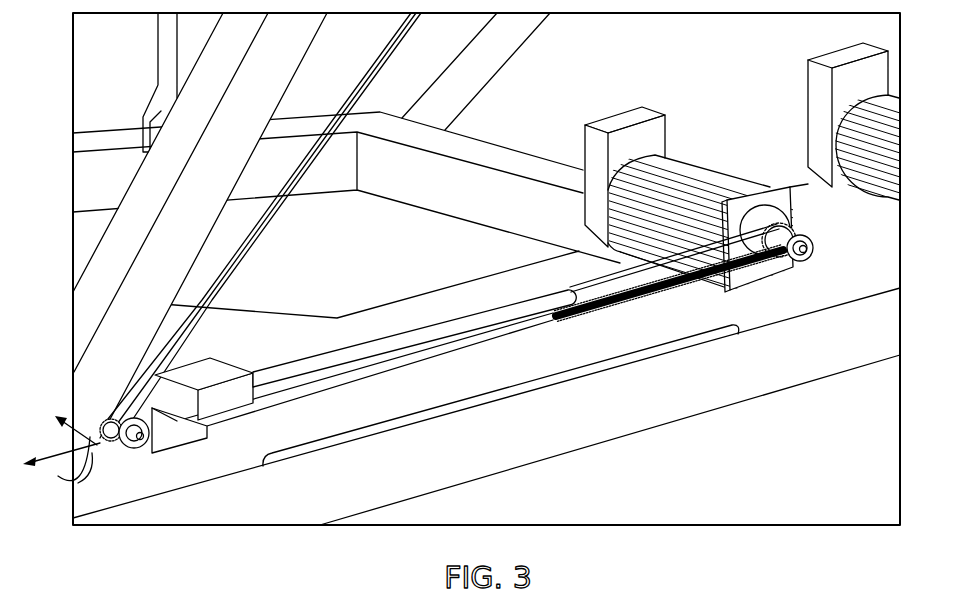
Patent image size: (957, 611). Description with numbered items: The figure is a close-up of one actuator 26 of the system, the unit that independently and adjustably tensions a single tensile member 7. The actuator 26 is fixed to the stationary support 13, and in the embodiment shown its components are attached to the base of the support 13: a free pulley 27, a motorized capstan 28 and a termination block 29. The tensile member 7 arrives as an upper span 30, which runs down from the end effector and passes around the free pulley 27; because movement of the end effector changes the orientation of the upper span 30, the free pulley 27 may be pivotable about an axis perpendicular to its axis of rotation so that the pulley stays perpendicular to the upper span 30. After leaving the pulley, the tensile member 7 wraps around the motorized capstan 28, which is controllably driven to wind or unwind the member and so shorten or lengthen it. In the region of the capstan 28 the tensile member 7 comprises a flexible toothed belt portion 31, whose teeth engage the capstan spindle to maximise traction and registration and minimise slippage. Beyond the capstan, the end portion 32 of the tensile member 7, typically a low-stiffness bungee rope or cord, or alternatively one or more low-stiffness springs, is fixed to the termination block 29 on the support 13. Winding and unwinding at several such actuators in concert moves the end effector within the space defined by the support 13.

The tensile member 7 is at (160, 360).
The stationary support 13 is at (99, 323).
The actuator 26 is at (517, 403).
The free pulley 27 is at (189, 446).
The motorized capstan 28 is at (757, 281).
The termination block 29 is at (205, 365).
The upper span 30 is at (356, 86).
The flexible toothed belt portion 31 is at (598, 298).
The end portion 32 is at (468, 312).